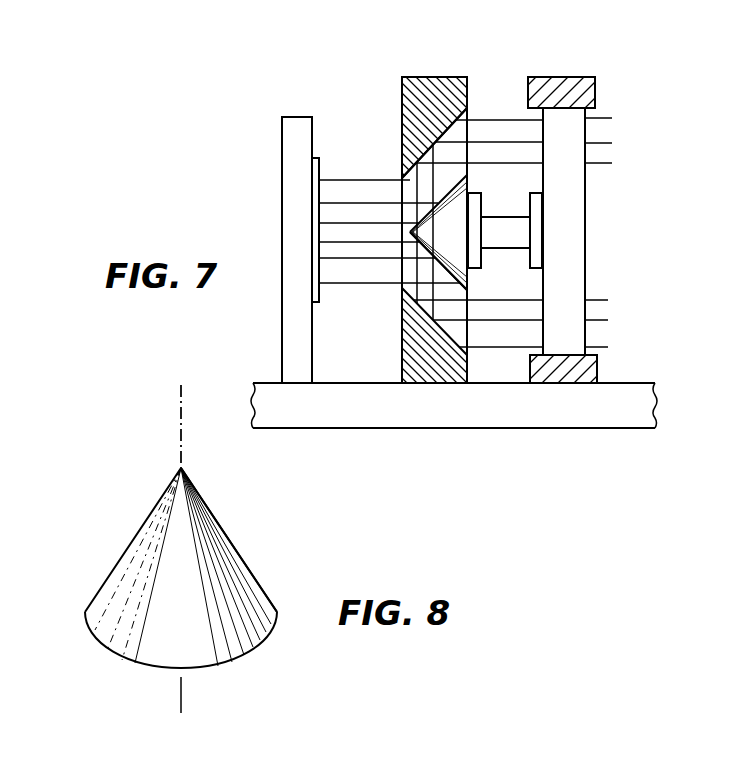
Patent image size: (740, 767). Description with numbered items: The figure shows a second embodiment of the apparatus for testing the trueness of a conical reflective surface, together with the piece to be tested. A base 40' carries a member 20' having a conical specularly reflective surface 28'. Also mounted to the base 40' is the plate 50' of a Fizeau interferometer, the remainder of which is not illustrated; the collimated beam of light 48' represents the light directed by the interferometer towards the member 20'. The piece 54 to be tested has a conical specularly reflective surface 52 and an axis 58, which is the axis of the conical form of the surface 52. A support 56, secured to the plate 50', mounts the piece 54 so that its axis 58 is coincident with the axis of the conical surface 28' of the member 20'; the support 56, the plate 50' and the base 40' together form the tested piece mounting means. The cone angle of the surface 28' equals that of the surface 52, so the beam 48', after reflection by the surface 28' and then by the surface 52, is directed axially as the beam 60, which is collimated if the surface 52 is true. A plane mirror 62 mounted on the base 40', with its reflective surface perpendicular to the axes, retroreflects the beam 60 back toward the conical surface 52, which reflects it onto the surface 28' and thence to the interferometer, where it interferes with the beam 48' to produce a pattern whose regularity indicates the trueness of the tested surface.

In FIG. 7, the member 20' is at (468, 207).
In FIG. 7, the conical specularly reflective surface 28' is at (468, 113).
In FIG. 7, the base 40' is at (454, 439).
In FIG. 7, the collimated beam of light 48' is at (537, 216).
In FIG. 7, the plate 50' is at (596, 230).
In FIG. 7, the conical specularly reflective surface 52 is at (410, 228).
In FIG. 8, the conical specularly reflective surface 52 is at (126, 550).
In FIG. 7, the piece to be tested 54 is at (469, 279).
In FIG. 8, the piece to be tested 54 is at (238, 575).
In FIG. 7, the support 56 is at (512, 228).
In FIG. 8, the axis 58 is at (181, 410).
In FIG. 7, the beam 60 is at (350, 285).
In FIG. 7, the plane mirror 62 is at (320, 170).